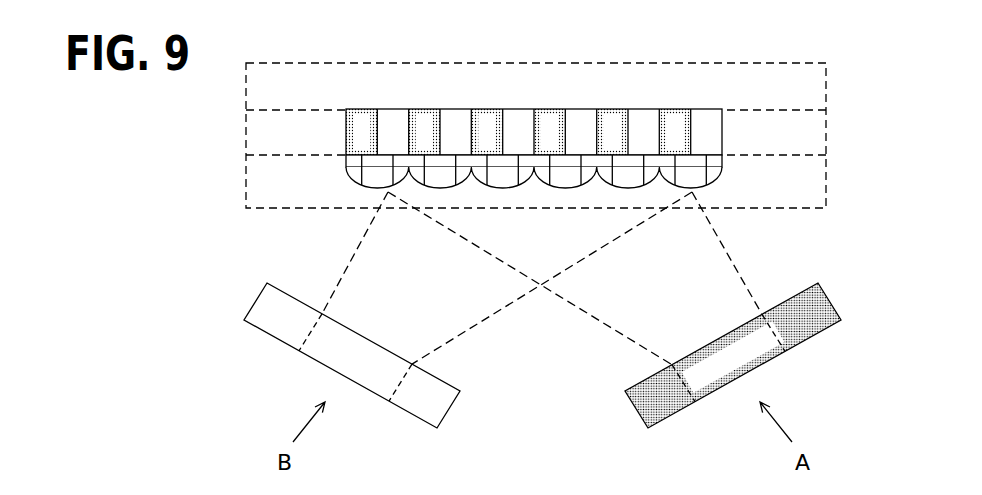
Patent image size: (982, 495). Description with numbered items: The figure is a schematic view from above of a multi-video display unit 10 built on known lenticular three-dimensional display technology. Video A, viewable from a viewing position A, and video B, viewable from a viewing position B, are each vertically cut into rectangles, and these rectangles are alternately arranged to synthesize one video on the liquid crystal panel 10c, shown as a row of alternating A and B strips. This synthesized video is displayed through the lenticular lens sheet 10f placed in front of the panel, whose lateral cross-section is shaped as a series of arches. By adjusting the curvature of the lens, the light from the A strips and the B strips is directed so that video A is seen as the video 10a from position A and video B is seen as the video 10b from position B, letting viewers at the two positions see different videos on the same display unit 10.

The display unit 10 is at (563, 62).
The video A 10a is at (808, 284).
The video B 10b is at (277, 284).
The liquid crystal panel 10c is at (647, 109).
The lenticular lens sheet 10f is at (722, 183).